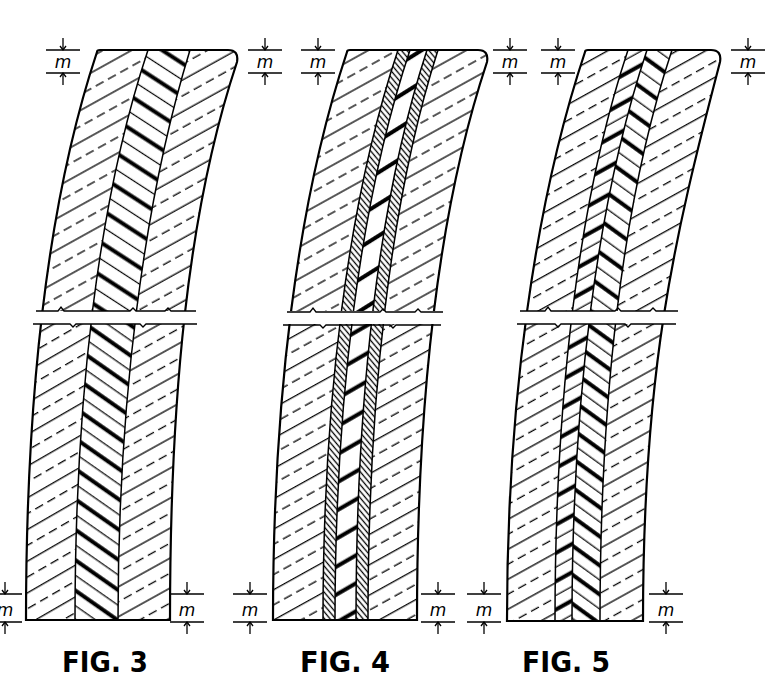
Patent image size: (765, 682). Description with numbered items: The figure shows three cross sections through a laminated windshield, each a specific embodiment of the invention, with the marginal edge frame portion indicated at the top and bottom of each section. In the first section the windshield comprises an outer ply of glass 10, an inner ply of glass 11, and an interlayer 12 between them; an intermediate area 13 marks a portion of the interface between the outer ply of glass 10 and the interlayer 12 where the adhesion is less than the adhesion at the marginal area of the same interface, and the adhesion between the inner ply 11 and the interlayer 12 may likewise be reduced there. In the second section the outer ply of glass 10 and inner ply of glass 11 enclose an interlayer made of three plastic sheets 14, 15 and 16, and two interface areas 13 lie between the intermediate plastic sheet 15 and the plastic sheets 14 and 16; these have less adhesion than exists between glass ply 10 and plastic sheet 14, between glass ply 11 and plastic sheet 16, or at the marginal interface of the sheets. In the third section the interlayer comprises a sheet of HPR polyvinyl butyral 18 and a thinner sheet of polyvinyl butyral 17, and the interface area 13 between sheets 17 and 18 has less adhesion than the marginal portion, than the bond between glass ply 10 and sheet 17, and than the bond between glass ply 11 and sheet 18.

In FIG. 3, the outer ply of glass 10 is at (64, 198).
In FIG. 4, the outer ply of glass 10 is at (308, 263).
In FIG. 5, the outer ply of glass 10 is at (551, 226).
In FIG. 3, the inner ply of glass 11 is at (184, 280).
In FIG. 4, the inner ply of glass 11 is at (438, 277).
In FIG. 5, the inner ply of glass 11 is at (668, 288).
In FIG. 3, the interlayer 12 is at (168, 50).
In FIG. 3, the intermediate area 13 is at (125, 128).
In FIG. 4, the intermediate area 13 is at (376, 163).
In FIG. 5, the intermediate area 13 is at (610, 167).
In FIG. 4, the plastic sheet 14 is at (405, 50).
In FIG. 4, the intermediate plastic sheet 15 is at (420, 50).
In FIG. 4, the plastic sheet 16 is at (436, 50).
In FIG. 5, the thinner sheet of polyvinyl butyral 17 is at (643, 50).
In FIG. 5, the sheet of HPR polyvinyl butyral 18 is at (660, 50).